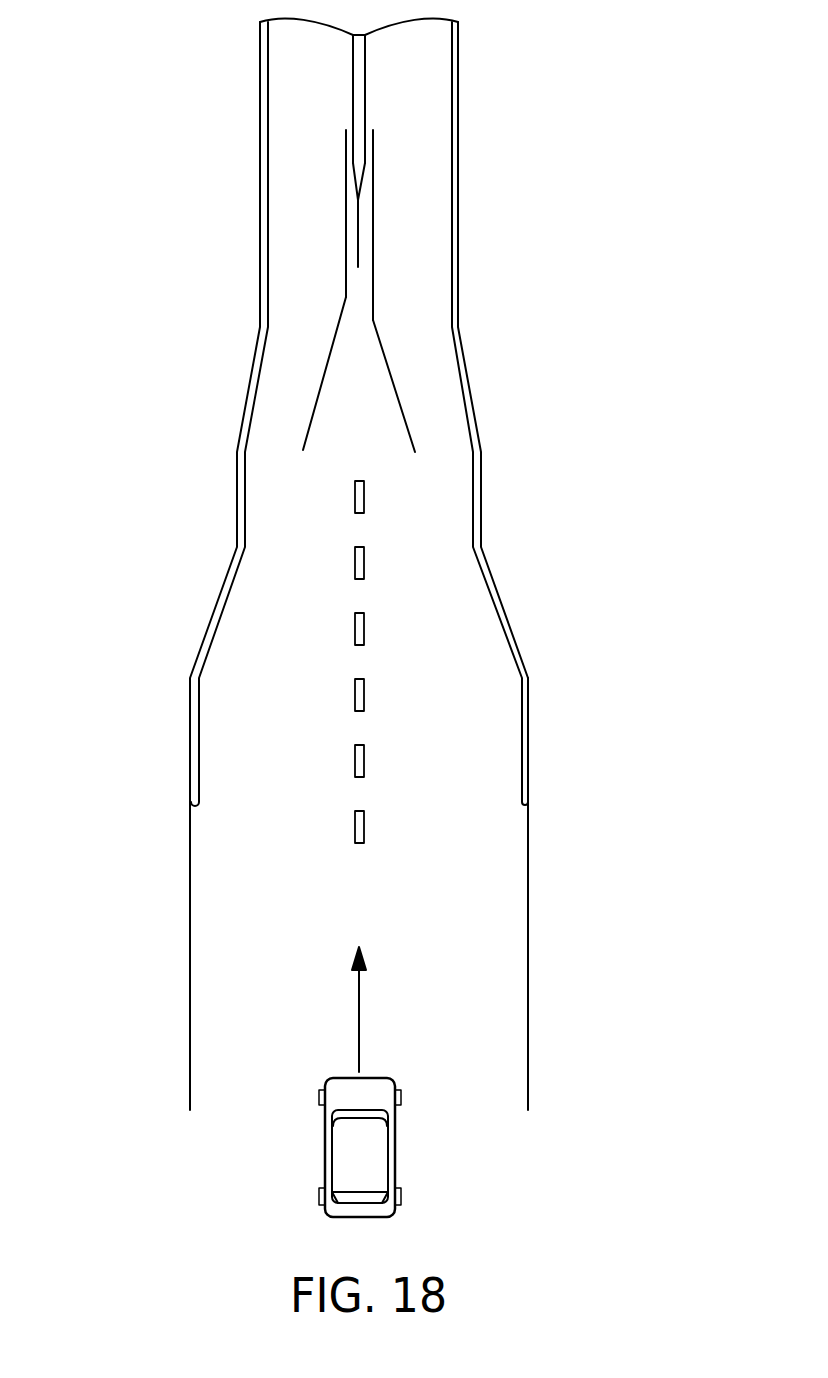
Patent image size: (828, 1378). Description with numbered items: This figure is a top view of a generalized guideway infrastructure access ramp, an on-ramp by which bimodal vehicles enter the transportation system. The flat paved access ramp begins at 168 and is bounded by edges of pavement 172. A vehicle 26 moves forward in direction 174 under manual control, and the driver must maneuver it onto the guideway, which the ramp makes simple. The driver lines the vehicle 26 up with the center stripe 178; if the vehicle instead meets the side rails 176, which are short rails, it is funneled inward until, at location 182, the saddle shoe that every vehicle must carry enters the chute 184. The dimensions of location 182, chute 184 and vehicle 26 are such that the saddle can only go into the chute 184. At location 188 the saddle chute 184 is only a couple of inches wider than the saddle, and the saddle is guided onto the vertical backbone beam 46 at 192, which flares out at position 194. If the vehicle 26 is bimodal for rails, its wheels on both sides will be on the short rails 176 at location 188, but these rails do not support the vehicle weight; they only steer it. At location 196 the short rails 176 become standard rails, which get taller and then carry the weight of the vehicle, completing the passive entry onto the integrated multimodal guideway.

The vehicle 26 is at (396, 1140).
The vertical backbone beam 46 is at (364, 100).
The access ramp beginning 168 is at (272, 1048).
The edges of pavement 172 is at (191, 977).
The direction of travel 174 is at (361, 1015).
The side rails 176 is at (193, 787).
The center stripe 178 is at (364, 832).
The saddle entry location 182 is at (483, 466).
The chute 184 is at (387, 357).
The narrow chute location 188 is at (346, 298).
The backbone beam guiding location 192 is at (374, 245).
The flare position 194 is at (366, 178).
The standard rail transition location 196 is at (364, 62).